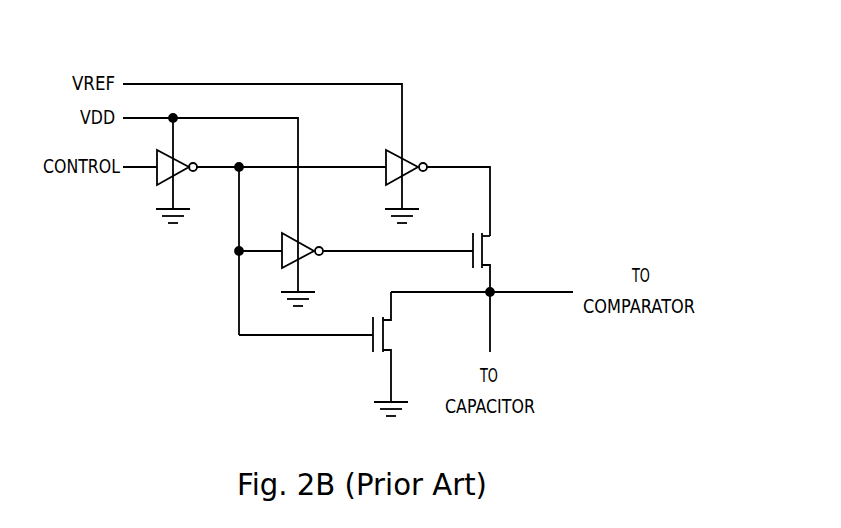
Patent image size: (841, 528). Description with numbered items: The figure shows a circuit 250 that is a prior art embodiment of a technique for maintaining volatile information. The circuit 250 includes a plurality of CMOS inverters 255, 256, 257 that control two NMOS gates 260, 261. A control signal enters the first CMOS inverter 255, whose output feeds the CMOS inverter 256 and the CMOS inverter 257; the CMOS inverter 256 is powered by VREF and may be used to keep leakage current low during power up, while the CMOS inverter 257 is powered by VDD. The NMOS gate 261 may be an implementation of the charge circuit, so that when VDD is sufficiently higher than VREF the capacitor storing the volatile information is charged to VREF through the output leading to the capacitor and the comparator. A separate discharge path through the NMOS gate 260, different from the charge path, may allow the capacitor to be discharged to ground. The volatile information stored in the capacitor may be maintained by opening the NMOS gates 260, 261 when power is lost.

The circuit 250 is at (598, 62).
The CMOS inverter 255 is at (186, 159).
The CMOS inverter 256 is at (410, 158).
The CMOS inverter 257 is at (309, 243).
The NMOS gate 260 is at (397, 330).
The NMOS gate 261 is at (496, 248).